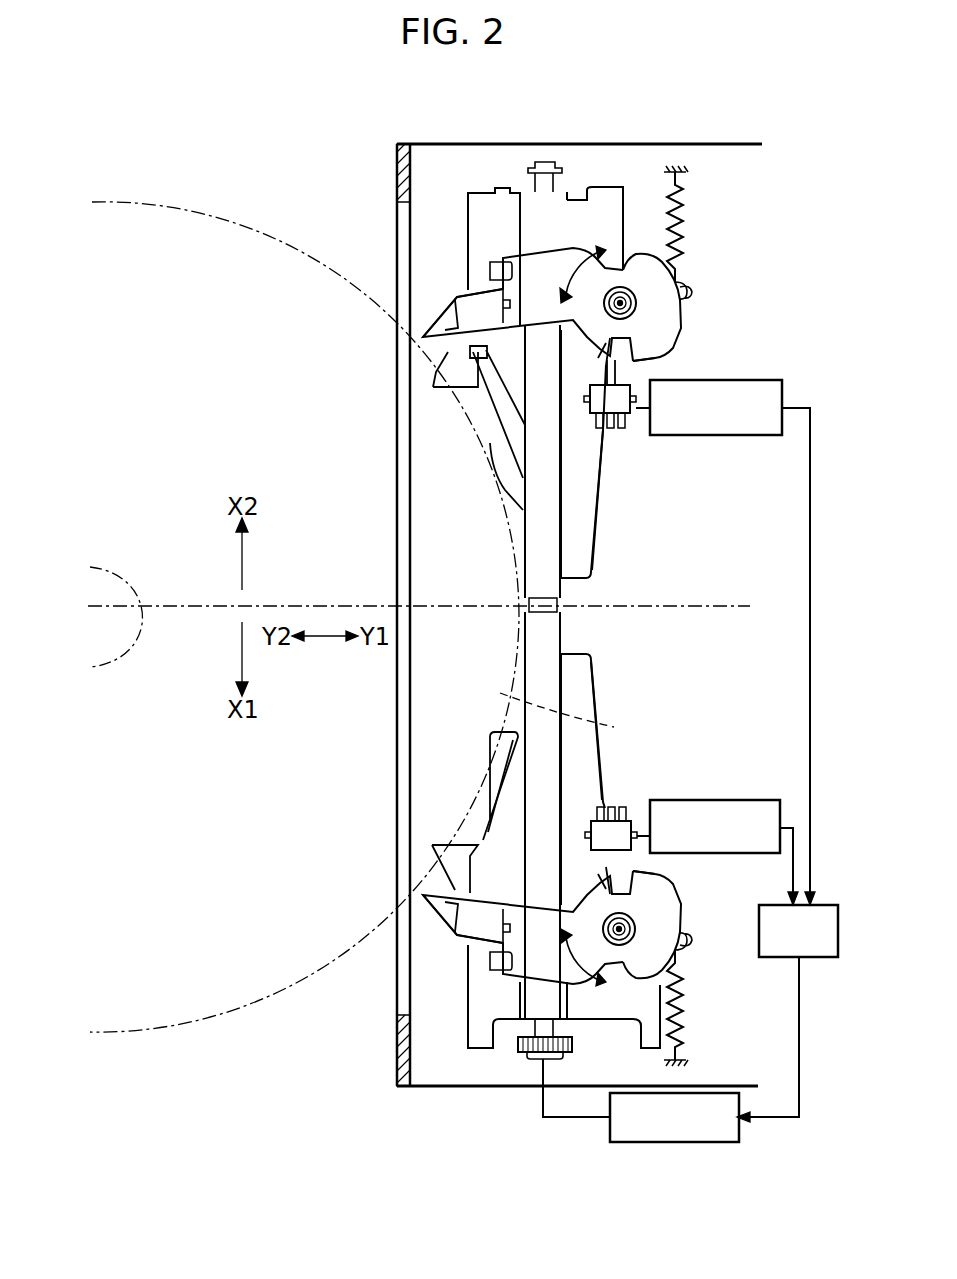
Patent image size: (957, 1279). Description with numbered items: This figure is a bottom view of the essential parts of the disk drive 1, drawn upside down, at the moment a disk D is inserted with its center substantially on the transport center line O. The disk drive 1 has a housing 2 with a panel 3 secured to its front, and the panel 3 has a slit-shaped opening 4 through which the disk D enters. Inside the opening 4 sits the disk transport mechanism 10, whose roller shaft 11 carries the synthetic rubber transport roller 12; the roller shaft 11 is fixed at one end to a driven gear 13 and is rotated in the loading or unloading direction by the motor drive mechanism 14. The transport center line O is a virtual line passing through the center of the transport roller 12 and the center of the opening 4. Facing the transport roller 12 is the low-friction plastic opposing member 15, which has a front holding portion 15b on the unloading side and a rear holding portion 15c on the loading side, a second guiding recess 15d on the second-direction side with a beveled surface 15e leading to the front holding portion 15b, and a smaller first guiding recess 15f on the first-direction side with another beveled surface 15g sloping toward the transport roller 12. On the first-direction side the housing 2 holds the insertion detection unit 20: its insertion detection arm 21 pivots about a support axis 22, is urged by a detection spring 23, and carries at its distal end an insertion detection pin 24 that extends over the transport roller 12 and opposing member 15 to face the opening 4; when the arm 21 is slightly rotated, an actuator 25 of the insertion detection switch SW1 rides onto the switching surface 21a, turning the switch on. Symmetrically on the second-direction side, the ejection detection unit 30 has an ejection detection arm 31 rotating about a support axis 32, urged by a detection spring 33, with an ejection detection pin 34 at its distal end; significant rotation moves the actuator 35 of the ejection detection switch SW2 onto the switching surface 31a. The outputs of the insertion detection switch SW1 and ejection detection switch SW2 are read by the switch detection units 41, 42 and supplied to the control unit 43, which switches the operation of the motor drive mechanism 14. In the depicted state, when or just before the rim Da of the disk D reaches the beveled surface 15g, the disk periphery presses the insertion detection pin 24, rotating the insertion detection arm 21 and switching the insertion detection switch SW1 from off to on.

The disk drive 1 is at (306, 168).
The housing 2 is at (488, 136).
The panel 3 is at (397, 180).
The opening 4 is at (397, 244).
The disk transport mechanism 10 is at (600, 674).
The roller shaft 11 is at (562, 178).
The transport roller 12 is at (553, 633).
The driven gear 13 is at (517, 1045).
The motor drive mechanism 14 is at (703, 1145).
The opposing member 15 is at (603, 550).
The front holding portion 15b is at (455, 345).
The rear holding portion 15c is at (585, 463).
The second guiding recess 15d is at (493, 455).
The beveled surface 15e is at (490, 402).
The first guiding recess 15f is at (495, 743).
The beveled surface 15g is at (497, 755).
The insertion detection unit 20 is at (448, 945).
The insertion detection arm 21 is at (542, 922).
The switching surface 21a is at (657, 862).
The support axis 22 is at (618, 947).
The detection spring 23 is at (690, 1019).
The insertion detection pin 24 is at (430, 893).
The actuator 25 is at (587, 860).
The ejection detection unit 30 is at (703, 326).
The ejection detection arm 31 is at (543, 316).
The switching surface 31a is at (683, 357).
The support axis 32 is at (628, 292).
The detection spring 33 is at (688, 212).
The ejection detection pin 34 is at (425, 330).
The actuator 35 is at (600, 375).
The switch detection unit 41 is at (713, 798).
The switch detection unit 42 is at (720, 437).
The control unit 43 is at (772, 958).
The insertion detection switch SW1 is at (634, 820).
The ejection detection switch SW2 is at (622, 413).
The disk D is at (171, 202).
The rim Da is at (573, 716).
The transport center line O is at (408, 617).